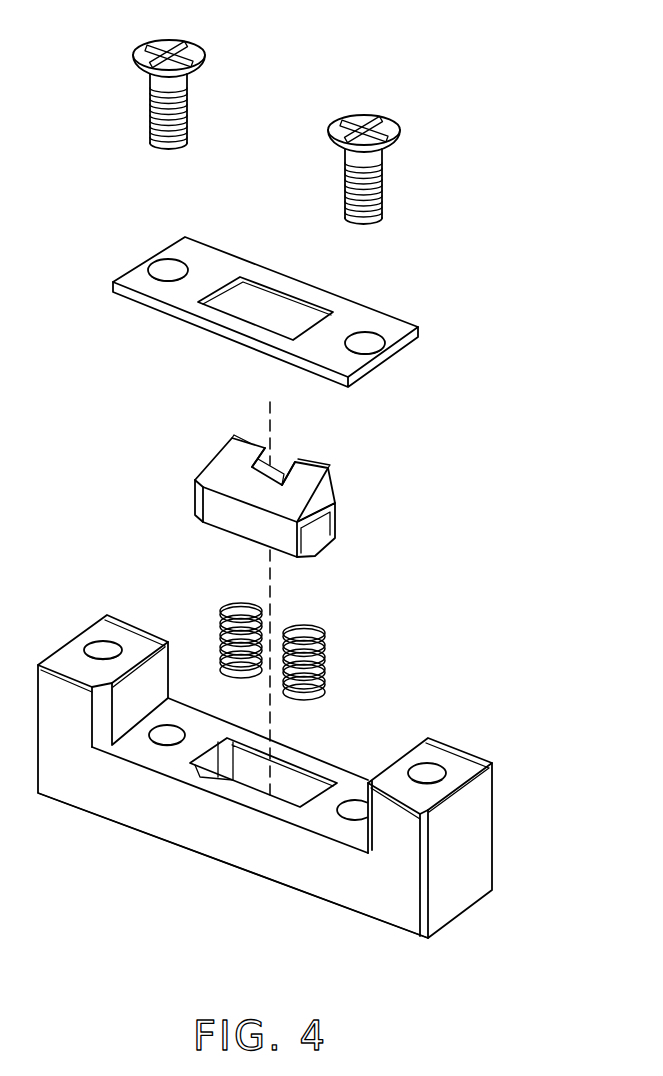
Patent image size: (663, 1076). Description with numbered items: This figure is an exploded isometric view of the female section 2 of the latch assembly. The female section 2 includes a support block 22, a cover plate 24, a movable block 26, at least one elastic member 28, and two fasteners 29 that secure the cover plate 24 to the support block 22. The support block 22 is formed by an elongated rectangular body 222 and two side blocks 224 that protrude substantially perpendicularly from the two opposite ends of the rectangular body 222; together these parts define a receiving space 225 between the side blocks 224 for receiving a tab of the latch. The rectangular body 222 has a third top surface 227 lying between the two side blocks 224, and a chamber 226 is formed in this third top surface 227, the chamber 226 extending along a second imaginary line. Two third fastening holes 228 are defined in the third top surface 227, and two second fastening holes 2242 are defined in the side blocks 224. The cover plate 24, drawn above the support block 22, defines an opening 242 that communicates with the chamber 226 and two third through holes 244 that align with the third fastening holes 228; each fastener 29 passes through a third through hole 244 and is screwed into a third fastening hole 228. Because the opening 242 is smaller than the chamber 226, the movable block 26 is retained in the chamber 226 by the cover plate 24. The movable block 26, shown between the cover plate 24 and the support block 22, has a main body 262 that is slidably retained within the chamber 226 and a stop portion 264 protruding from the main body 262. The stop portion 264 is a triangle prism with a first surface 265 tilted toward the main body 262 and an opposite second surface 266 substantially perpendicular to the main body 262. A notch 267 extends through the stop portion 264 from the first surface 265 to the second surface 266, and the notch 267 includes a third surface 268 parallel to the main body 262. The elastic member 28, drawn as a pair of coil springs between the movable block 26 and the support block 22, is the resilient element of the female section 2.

The female section 2 is at (508, 70).
The fasteners 29 is at (133, 70).
The cover plate 24 is at (243, 303).
The opening 242 is at (265, 305).
The third through holes 244 is at (366, 338).
The movable block 26 is at (258, 487).
The main body 262 is at (238, 522).
The stop portion 264 is at (324, 470).
The first surface 265 is at (308, 480).
The second surface 266 is at (330, 492).
The notch 267 is at (262, 462).
The third surface 268 is at (273, 472).
The elastic member 28 is at (325, 655).
The support block 22 is at (282, 777).
The rectangular body 222 is at (345, 870).
The side blocks 224 is at (458, 822).
The second fastening holes 2242 is at (425, 768).
The receiving space 225 is at (201, 696).
The chamber 226 is at (293, 790).
The third top surface 227 is at (335, 825).
The third fastening holes 228 is at (165, 740).